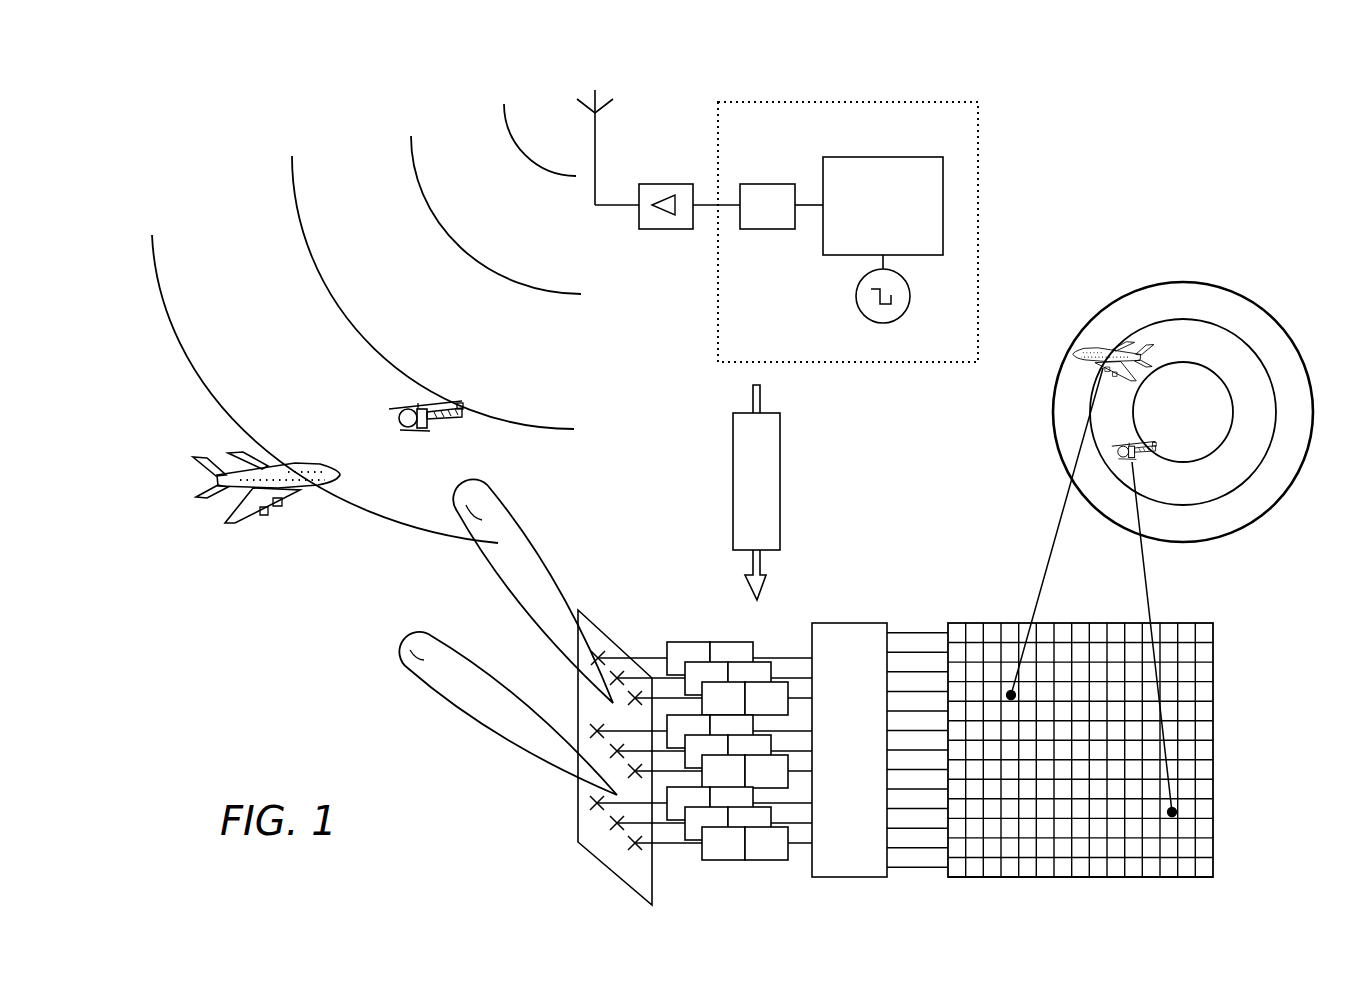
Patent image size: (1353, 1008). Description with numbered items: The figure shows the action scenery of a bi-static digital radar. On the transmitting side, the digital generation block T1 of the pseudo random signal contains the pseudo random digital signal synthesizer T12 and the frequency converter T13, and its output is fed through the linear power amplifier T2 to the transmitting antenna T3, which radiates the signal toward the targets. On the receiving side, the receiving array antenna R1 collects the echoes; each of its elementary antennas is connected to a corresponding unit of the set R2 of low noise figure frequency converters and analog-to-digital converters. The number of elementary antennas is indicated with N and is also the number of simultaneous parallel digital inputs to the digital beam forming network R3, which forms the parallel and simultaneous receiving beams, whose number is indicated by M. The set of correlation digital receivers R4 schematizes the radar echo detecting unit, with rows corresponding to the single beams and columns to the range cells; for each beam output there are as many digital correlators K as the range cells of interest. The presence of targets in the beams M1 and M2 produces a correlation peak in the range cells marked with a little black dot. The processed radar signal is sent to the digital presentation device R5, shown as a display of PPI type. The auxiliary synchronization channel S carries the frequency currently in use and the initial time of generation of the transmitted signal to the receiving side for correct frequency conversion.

The digital generation block of the pseudo random signal T1 is at (978, 150).
The linear power amplifier T2 is at (687, 184).
The transmitting antenna T3 is at (598, 121).
The pseudo random digital signal synthesizer T12 is at (848, 256).
The frequency converter T13 is at (745, 184).
The auxiliary synchronization channel S is at (768, 483).
The receiving array antenna R1 is at (595, 622).
The set of low noise figure frequency converters and analog-to-digital converters R2 is at (717, 861).
The number of elementary antennas of the array N is at (805, 655).
The digital beam forming network R3 is at (840, 623).
The number of receiving beams M is at (920, 633).
The set of correlation digital receivers R4 is at (1065, 623).
The digital correlators K is at (1030, 878).
The digital presentation device R5 is at (1225, 285).
The beam M1 is at (406, 645).
The beam M2 is at (462, 503).